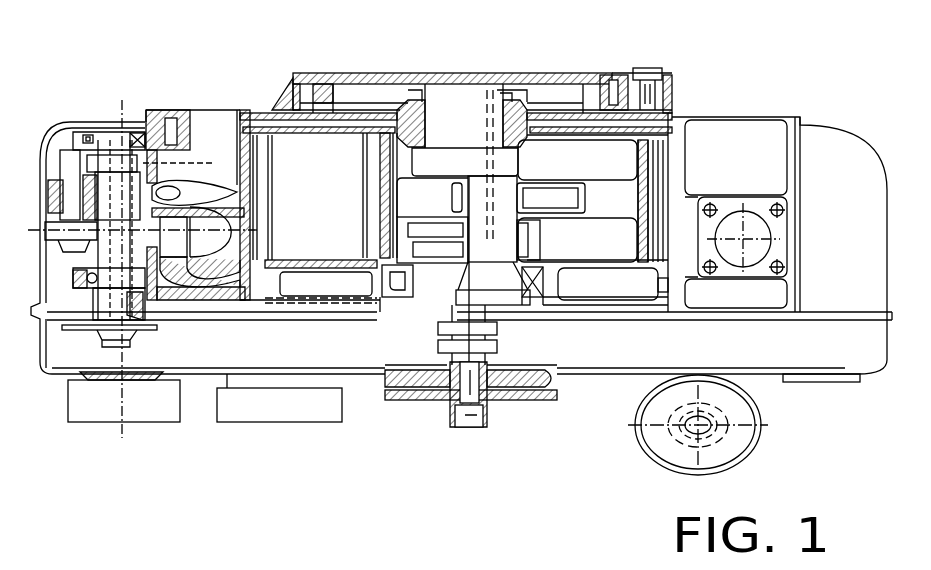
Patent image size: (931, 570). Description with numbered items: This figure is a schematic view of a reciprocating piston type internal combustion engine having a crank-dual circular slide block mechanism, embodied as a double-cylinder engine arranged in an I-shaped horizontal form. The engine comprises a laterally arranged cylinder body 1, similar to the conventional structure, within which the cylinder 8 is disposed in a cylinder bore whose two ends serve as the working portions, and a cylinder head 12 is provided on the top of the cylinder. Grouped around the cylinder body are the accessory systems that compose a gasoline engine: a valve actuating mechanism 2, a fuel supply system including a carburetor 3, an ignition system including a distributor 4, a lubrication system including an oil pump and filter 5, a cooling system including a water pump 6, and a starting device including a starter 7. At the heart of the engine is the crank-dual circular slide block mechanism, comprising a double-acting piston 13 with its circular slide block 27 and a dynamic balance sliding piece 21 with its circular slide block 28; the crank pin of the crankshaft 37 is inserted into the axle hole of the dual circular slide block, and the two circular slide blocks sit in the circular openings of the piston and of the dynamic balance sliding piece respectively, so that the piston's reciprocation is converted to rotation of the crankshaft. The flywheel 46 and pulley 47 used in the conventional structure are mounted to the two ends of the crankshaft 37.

The cylinder body 1 is at (240, 112).
The valve actuating mechanism 2 is at (118, 190).
The carburetor 3 is at (757, 210).
The distributor 4 is at (88, 411).
The oil pump and filter 5 is at (728, 419).
The water pump 6 is at (242, 412).
The starter 7 is at (650, 72).
The cylinder 8 is at (320, 150).
The cylinder head 12 is at (218, 162).
The double-acting piston 13 is at (628, 202).
The dynamic balance sliding piece 21 is at (378, 280).
The circular slide block 27 is at (553, 185).
The circular slide block 28 is at (432, 240).
The crankshaft 37 is at (490, 187).
The flywheel 46 is at (382, 73).
The pulley 47 is at (403, 403).